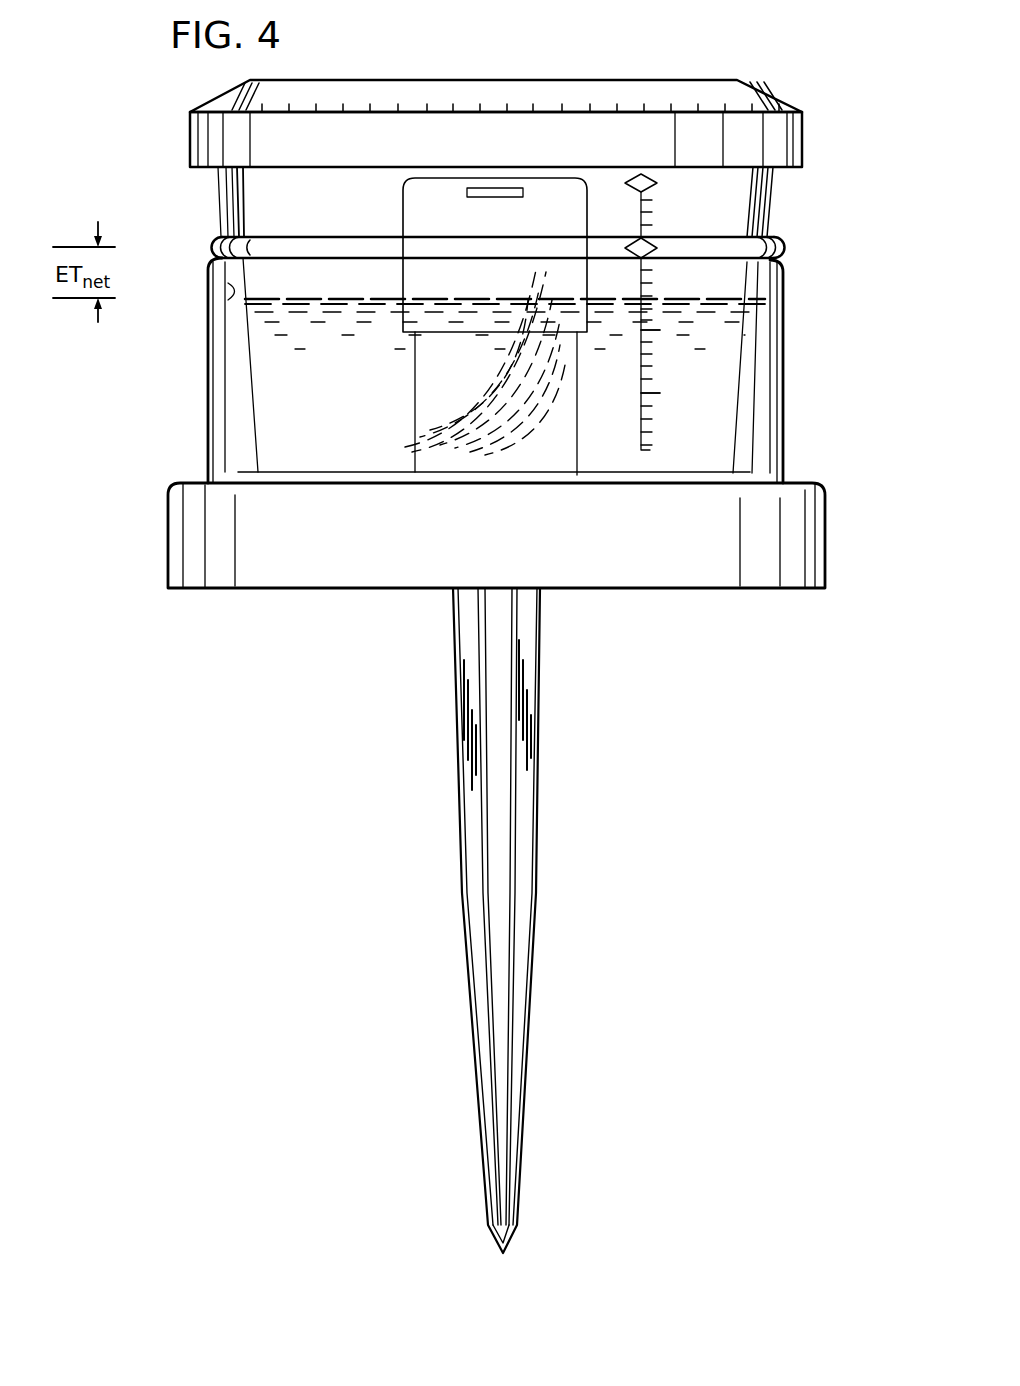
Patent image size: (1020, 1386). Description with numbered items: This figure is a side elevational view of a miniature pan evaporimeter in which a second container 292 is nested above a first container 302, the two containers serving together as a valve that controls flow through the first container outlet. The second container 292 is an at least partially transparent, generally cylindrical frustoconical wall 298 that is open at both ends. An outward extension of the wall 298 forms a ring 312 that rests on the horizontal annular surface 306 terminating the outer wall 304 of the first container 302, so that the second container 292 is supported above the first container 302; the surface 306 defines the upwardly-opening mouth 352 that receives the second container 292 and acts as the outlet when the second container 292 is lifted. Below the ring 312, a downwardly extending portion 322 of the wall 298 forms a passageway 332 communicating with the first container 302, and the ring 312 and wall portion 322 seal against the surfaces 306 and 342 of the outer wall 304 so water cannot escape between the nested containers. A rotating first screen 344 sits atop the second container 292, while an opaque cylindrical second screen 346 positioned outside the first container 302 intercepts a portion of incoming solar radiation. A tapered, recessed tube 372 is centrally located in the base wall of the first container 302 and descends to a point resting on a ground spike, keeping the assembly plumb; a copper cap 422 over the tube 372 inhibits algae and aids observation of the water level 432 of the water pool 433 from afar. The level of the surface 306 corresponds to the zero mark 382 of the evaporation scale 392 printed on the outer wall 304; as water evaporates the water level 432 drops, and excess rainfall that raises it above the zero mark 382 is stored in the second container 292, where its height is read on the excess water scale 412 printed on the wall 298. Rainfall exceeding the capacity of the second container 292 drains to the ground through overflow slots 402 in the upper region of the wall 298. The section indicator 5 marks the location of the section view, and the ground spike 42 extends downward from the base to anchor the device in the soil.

The section line 5- 5 is at (532, 25).
The ground stake 42 is at (452, 898).
The second container 292 is at (785, 187).
The frustoconical wall 298 is at (218, 190).
The first container 302 is at (798, 445).
The outer wall 304 is at (776, 420).
The horizontal annular surface 306 is at (778, 262).
The ring 312 is at (222, 235).
The downwardly extending portion 322 is at (240, 385).
The passageway 332 is at (278, 428).
The surface 342 is at (240, 297).
The first screen 344 is at (180, 128).
The second screen 346 is at (186, 600).
The mouth 352 is at (222, 262).
The tapered and recessed tube 372 is at (430, 438).
The zero mark 382 is at (682, 247).
The evaporation scale 392 is at (650, 390).
The overflow slots 402 is at (467, 192).
The excess water scale 412 is at (640, 217).
The copper cap 422 is at (545, 180).
The water level 432 is at (648, 298).
The water pool 433 is at (600, 458).